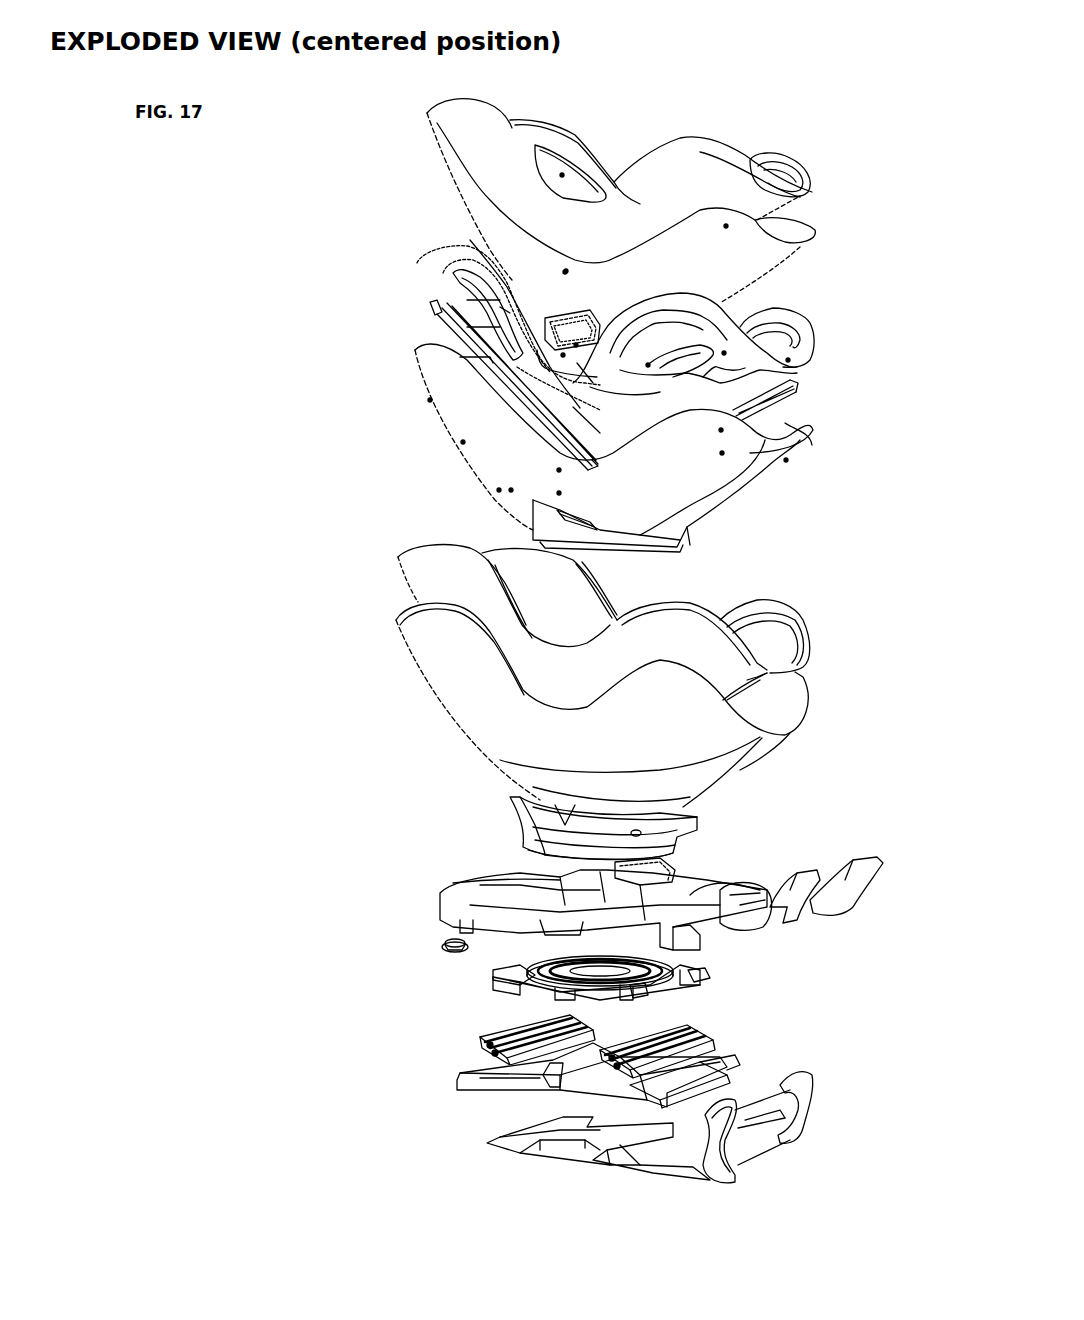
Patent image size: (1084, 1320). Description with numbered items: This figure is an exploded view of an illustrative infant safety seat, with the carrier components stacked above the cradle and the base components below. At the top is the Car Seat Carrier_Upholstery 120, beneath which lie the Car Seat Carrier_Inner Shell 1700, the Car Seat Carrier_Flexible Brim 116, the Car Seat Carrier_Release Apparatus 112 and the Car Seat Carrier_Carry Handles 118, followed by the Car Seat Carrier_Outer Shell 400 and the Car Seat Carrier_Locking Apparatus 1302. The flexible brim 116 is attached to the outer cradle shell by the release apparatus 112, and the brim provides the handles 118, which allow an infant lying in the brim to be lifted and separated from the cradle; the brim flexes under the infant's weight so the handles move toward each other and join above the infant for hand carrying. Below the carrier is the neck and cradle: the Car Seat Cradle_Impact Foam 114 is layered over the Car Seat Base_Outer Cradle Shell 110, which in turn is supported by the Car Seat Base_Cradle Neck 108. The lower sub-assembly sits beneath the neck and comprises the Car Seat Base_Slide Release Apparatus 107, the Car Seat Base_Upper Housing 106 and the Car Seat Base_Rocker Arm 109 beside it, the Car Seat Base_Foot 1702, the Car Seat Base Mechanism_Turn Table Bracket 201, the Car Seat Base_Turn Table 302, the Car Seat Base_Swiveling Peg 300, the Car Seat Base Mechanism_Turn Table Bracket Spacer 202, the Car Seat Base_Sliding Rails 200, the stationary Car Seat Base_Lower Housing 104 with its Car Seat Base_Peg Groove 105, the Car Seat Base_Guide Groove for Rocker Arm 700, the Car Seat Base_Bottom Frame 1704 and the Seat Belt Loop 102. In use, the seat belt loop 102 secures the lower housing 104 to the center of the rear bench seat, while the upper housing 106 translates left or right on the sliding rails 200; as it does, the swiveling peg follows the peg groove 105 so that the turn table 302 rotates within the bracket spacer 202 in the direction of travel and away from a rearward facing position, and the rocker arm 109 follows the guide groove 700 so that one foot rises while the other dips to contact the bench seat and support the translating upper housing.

The Car Seat Carrier_Upholstery 120 is at (500, 167).
The Car Seat Carrier_Inner Shell 1700 is at (500, 240).
The Car Seat Carrier_Flexible Brim 116 is at (500, 279).
The Car Seat Carrier_Release Apparatus 112 is at (428, 308).
The Car Seat Carrier_Carry Handles 118 is at (568, 331).
The Car Seat Carrier_Outer Shell 400 is at (500, 441).
The Car Seat Carrier_Locking Apparatus 1302 is at (568, 518).
The Car Seat Cradle_Impact Foam 114 is at (568, 593).
The Car Seat Base_Outer Cradle Shell 110 is at (568, 741).
The Car Seat Base_Cradle Neck 108 is at (568, 840).
The Car Seat Base_Slide Release Apparatus 107 is at (646, 866).
The Car Seat Base_Upper Housing 106 is at (568, 910).
The Car Seat Base_Rocker Arm 109 is at (705, 905).
The Car Seat Base_Foot 1702 is at (440, 944).
The Car Seat Base Mechanism_Turn Table Bracket 201 is at (515, 968).
The Car Seat Base_Turn Table 302 is at (642, 962).
The Car Seat Base_Swiveling Peg 300 is at (553, 987).
The Car Seat Base Mechanism_Turn Table Bracket Spacer 202 is at (640, 991).
The Car Seat Base_Sliding Rails 200 is at (615, 1048).
The Car Seat Base_Lower Housing 104 is at (506, 1084).
The Car Seat Base_Peg Groove 105 is at (545, 1080).
The Car Seat Base_Guide Groove for Rocker Arm 700 is at (660, 1087).
The Car Seat Base_Bottom Frame 1704 is at (578, 1147).
The Seat Belt Loop 102 is at (794, 1115).